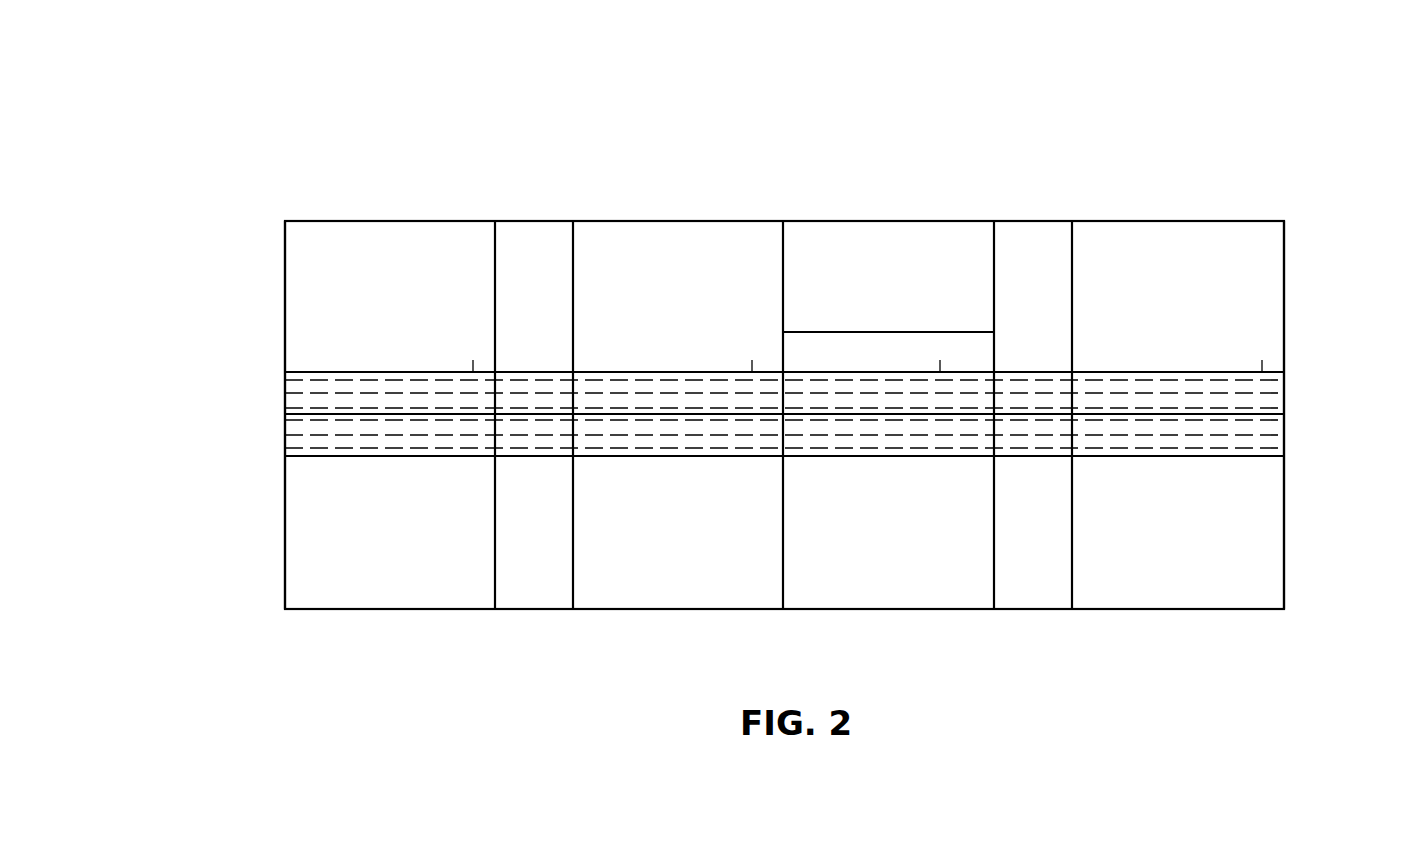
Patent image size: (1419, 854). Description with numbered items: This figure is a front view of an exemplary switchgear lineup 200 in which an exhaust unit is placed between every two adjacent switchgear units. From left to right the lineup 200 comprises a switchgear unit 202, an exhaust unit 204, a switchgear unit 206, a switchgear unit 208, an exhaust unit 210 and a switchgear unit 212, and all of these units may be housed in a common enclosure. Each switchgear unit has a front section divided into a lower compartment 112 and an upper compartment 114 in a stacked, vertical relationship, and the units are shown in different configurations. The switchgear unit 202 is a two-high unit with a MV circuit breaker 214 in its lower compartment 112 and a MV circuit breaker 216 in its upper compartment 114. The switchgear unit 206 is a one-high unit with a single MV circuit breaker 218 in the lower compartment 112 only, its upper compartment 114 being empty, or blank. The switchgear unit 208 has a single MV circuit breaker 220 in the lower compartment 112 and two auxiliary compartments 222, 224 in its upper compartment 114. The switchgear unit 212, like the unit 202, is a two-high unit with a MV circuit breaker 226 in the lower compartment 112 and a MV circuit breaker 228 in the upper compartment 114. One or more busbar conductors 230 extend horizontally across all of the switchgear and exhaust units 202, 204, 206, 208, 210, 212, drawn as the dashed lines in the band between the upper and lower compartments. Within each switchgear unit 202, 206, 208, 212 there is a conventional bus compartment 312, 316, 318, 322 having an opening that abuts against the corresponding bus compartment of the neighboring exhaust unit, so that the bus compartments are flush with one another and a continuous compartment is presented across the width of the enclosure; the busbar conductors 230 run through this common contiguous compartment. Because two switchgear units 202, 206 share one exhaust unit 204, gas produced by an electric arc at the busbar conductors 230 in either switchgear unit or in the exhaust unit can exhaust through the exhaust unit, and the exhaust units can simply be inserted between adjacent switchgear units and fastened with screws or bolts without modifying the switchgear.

The switchgear lineup 200 is at (248, 134).
The lower compartment 112 is at (285, 556).
The upper compartment 114 is at (285, 364).
The switchgear unit 202 is at (370, 218).
The exhaust unit 204 is at (534, 218).
The switchgear unit 206 is at (680, 218).
The switchgear unit 208 is at (890, 218).
The exhaust unit 210 is at (1034, 218).
The switchgear unit 212 is at (1184, 218).
The MV circuit breaker 214 is at (395, 553).
The MV circuit breaker 216 is at (323, 297).
The MV circuit breaker 218 is at (700, 553).
The MV circuit breaker 220 is at (885, 553).
The auxiliary compartment 222 is at (908, 365).
The auxiliary compartment 224 is at (908, 271).
The MV circuit breaker 226 is at (1170, 553).
The MV circuit breaker 228 is at (1110, 257).
The busbar conductors 230 is at (1253, 377).
The bus compartment 312 is at (473, 360).
The bus compartment 316 is at (752, 360).
The bus compartment 318 is at (940, 360).
The bus compartment 322 is at (1262, 360).